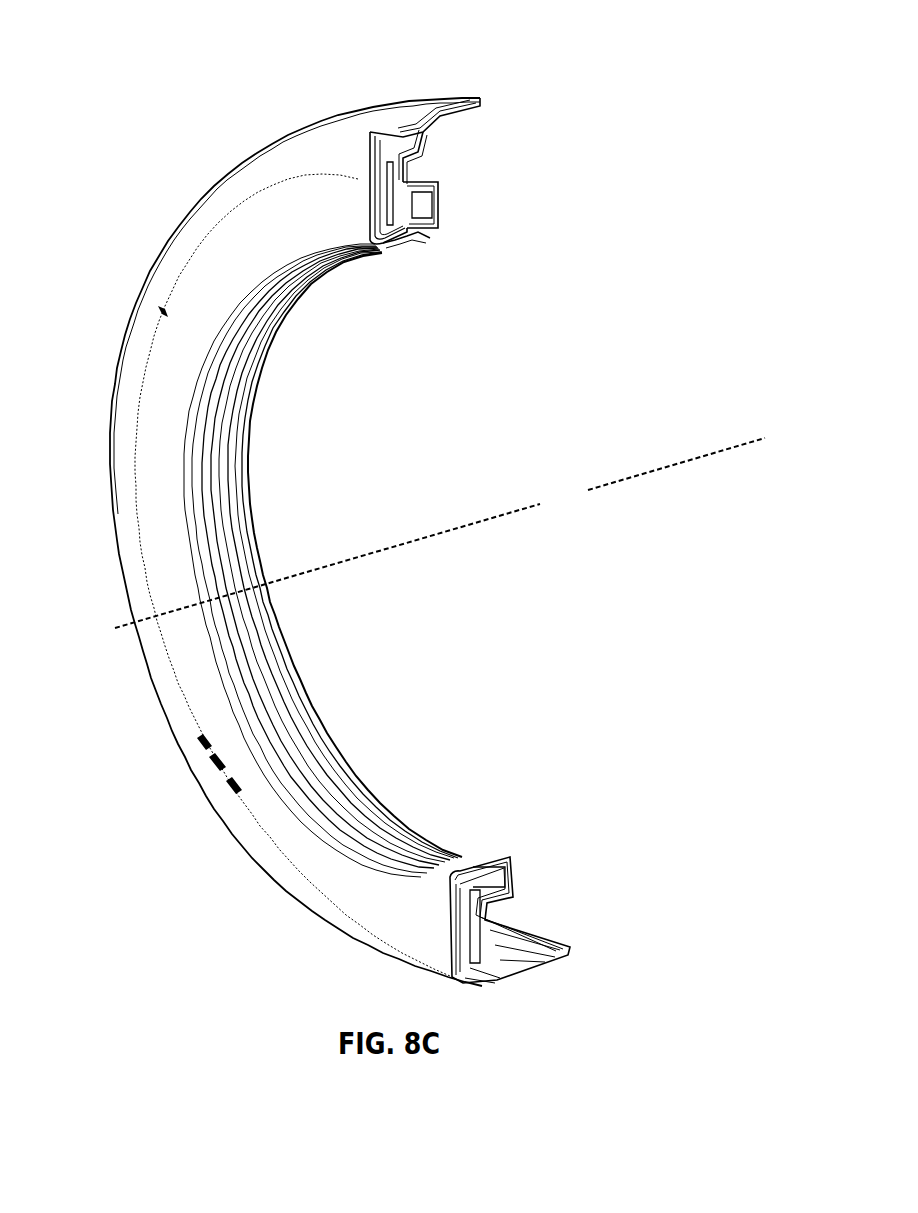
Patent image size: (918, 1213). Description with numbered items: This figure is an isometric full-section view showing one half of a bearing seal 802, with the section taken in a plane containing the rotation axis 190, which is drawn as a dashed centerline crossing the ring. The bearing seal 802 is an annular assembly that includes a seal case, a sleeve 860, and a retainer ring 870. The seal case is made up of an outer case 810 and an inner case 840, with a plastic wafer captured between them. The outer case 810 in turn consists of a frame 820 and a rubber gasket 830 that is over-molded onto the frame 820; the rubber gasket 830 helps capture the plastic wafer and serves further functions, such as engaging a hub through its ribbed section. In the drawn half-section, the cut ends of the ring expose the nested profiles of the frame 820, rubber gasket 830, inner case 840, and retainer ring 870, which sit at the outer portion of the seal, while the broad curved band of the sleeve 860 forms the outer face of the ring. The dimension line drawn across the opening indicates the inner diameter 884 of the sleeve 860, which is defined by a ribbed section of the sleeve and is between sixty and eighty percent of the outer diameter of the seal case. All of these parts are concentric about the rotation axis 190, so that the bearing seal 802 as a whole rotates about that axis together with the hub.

The bearing seal 802 is at (115, 125).
The outer case 810 is at (488, 100).
The frame 820 is at (387, 101).
The rubber gasket 830 is at (440, 132).
The inner case 840 is at (405, 240).
The sleeve 860 is at (310, 843).
The retainer ring 870 is at (440, 202).
The inner diameter of sleeve 884 is at (432, 236).
The rotation axis 190 is at (440, 533).